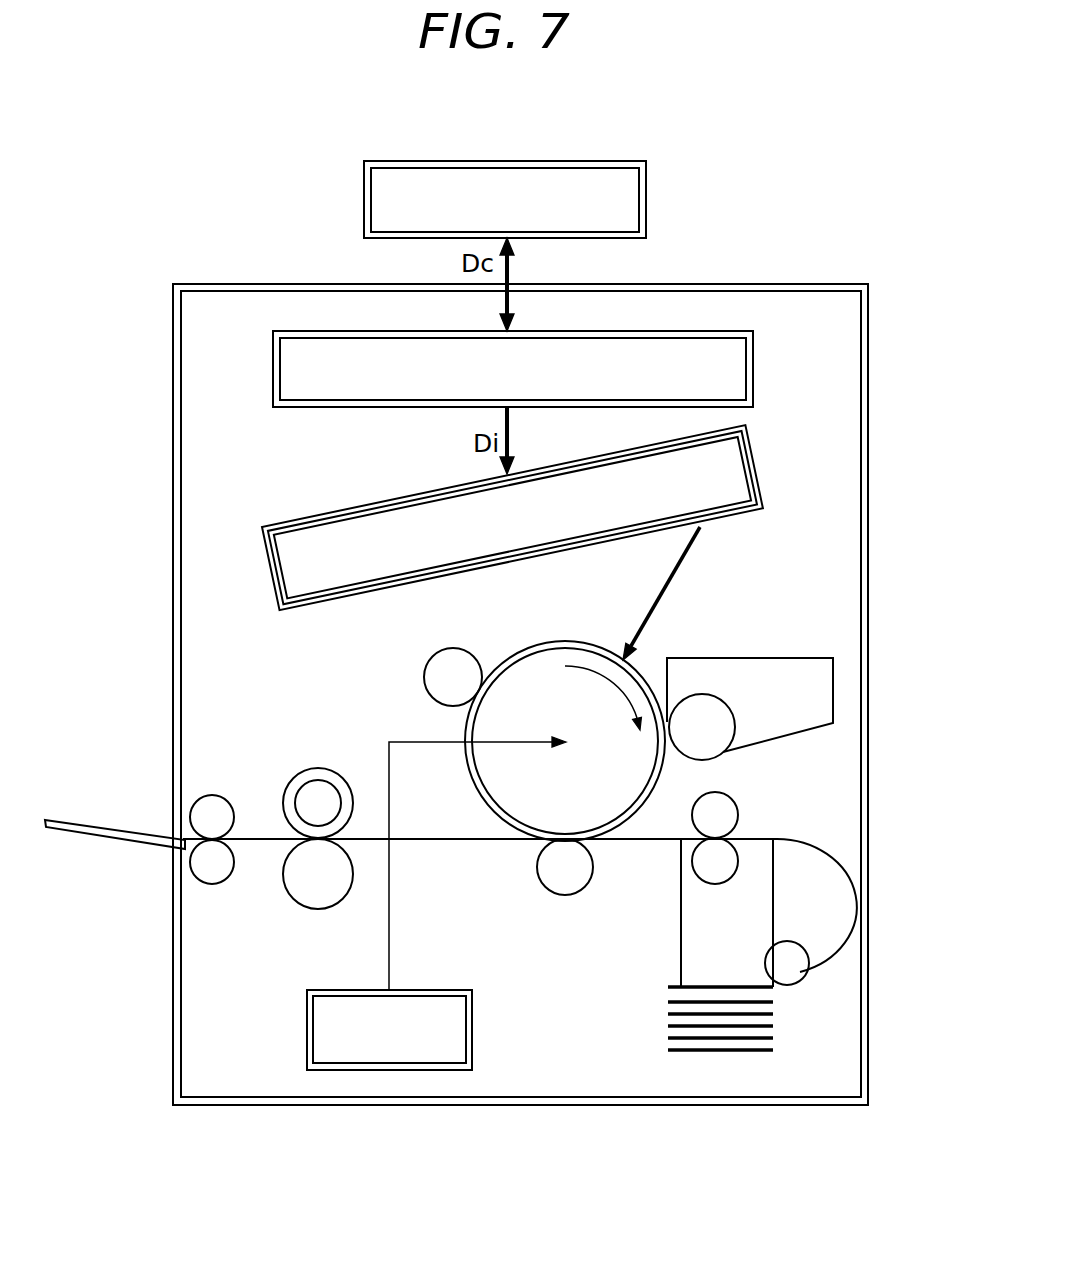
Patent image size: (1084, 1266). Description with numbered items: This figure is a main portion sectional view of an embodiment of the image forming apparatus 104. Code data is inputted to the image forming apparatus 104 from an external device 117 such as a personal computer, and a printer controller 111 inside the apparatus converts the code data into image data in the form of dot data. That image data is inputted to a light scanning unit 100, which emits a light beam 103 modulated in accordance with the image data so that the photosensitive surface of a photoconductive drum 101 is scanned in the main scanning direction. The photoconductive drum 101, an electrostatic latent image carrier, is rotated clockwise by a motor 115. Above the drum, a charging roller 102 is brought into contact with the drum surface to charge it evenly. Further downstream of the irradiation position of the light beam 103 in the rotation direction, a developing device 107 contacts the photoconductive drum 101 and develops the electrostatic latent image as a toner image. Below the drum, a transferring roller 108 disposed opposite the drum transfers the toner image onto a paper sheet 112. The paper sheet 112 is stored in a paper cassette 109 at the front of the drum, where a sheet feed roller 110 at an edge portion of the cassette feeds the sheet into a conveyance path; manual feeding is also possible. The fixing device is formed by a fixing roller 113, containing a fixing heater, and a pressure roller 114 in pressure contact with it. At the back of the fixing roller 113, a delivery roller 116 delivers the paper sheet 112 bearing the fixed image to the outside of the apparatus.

The light scanning unit 100 is at (359, 508).
The photoconductive drum 101 is at (647, 768).
The charging roller 102 is at (452, 660).
The light beam 103 is at (672, 582).
The image forming apparatus 104 is at (823, 266).
The developing device 107 is at (833, 672).
The transferring roller 108 is at (570, 888).
The paper cassette 109 is at (650, 1032).
The sheet feed roller 110 is at (783, 963).
The printer controller 111 is at (753, 355).
The paper sheet 112 is at (438, 840).
The fixing roller 113 is at (312, 795).
The pressure roller 114 is at (295, 888).
The motor 115 is at (307, 1030).
The delivery roller 116 is at (222, 808).
The external device 117 is at (646, 181).